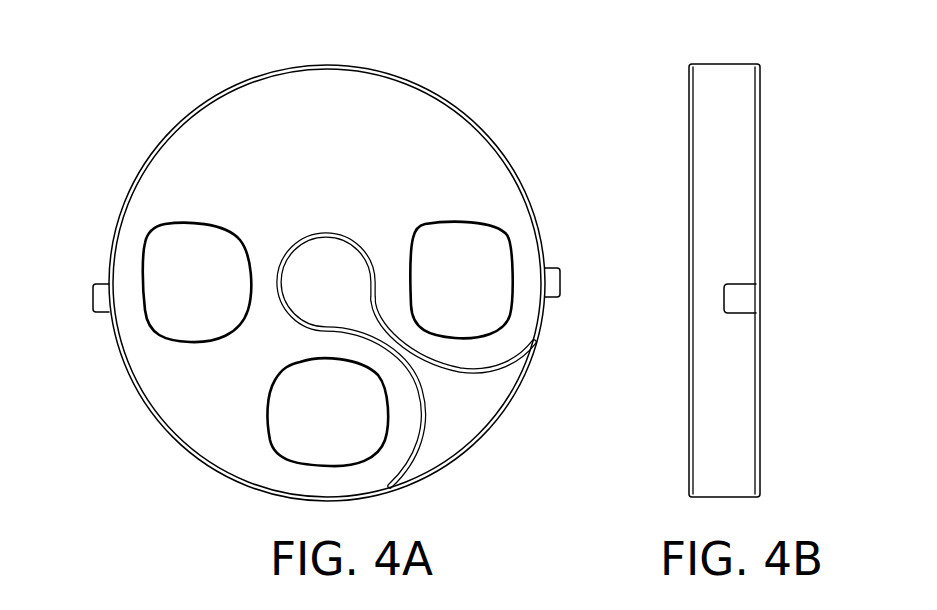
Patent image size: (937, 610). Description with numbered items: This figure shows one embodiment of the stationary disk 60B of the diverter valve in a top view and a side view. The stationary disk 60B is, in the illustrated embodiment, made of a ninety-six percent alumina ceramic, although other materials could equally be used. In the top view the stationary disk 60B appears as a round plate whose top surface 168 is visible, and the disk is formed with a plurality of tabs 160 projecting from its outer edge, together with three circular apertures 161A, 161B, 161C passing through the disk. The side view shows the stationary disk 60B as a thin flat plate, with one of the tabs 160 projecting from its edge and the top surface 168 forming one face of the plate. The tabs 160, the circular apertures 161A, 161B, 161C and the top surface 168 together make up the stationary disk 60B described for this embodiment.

In FIG. 4A, the stationary disk 60B is at (457, 80).
In FIG. 4B, the stationary disk 60B is at (746, 40).
In FIG. 4A, the tabs 160 is at (96, 283).
In FIG. 4B, the tabs 160 is at (746, 282).
In FIG. 4A, the circular aperture 161A is at (164, 222).
In FIG. 4A, the circular aperture 161B is at (500, 222).
In FIG. 4A, the circular aperture 161C is at (277, 456).
In FIG. 4A, the top surface 168 is at (280, 146).
In FIG. 4B, the top surface 168 is at (763, 406).